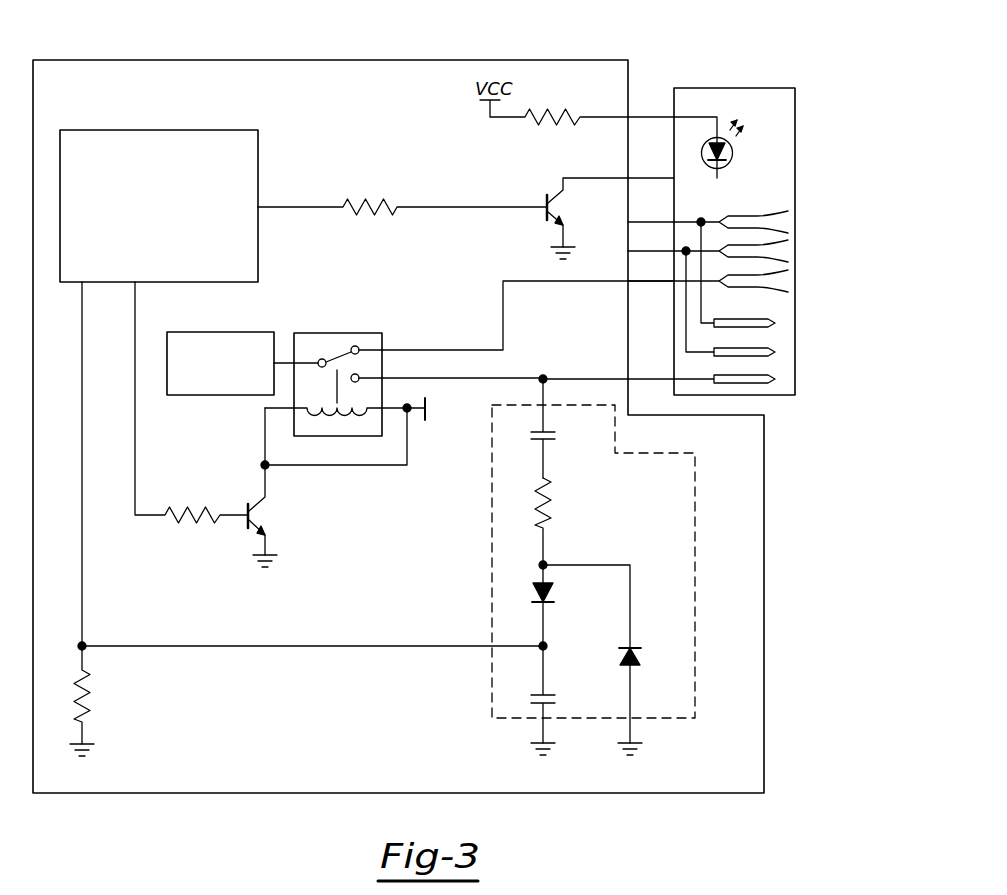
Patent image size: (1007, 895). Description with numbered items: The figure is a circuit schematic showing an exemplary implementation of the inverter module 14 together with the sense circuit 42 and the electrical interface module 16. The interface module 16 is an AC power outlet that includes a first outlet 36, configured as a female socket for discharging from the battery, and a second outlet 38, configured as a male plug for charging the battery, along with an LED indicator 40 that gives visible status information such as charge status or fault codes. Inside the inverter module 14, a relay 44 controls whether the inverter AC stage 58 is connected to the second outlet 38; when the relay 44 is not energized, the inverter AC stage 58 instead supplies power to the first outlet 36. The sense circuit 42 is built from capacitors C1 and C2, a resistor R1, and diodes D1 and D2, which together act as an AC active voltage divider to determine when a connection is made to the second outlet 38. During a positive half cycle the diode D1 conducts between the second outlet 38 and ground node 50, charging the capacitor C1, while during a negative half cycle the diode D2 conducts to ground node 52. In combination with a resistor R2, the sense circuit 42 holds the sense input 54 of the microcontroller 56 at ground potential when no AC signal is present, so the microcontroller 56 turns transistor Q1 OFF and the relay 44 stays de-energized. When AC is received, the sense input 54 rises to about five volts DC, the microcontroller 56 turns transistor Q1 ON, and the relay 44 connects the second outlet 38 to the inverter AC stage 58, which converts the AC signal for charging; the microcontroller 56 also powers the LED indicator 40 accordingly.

The inverter module 14 is at (400, 60).
The electrical interface module 16 is at (727, 90).
The first outlet 36 is at (790, 214).
The second outlet 38 is at (790, 365).
The LED indicator 40 is at (733, 157).
The sense circuit 42 is at (698, 563).
The relay 44 is at (350, 333).
The ground node 50 is at (530, 750).
The ground node 52 is at (642, 749).
The sense input 54 is at (82, 562).
The microcontroller 56 is at (258, 147).
The inverter AC stage 58 is at (200, 395).
The transistor Q1 is at (268, 522).
The resistor R1 is at (550, 505).
The resistor R2 is at (88, 696).
The capacitor C1 is at (553, 440).
The capacitor C2 is at (548, 692).
The diode D1 is at (552, 590).
The diode D2 is at (634, 657).